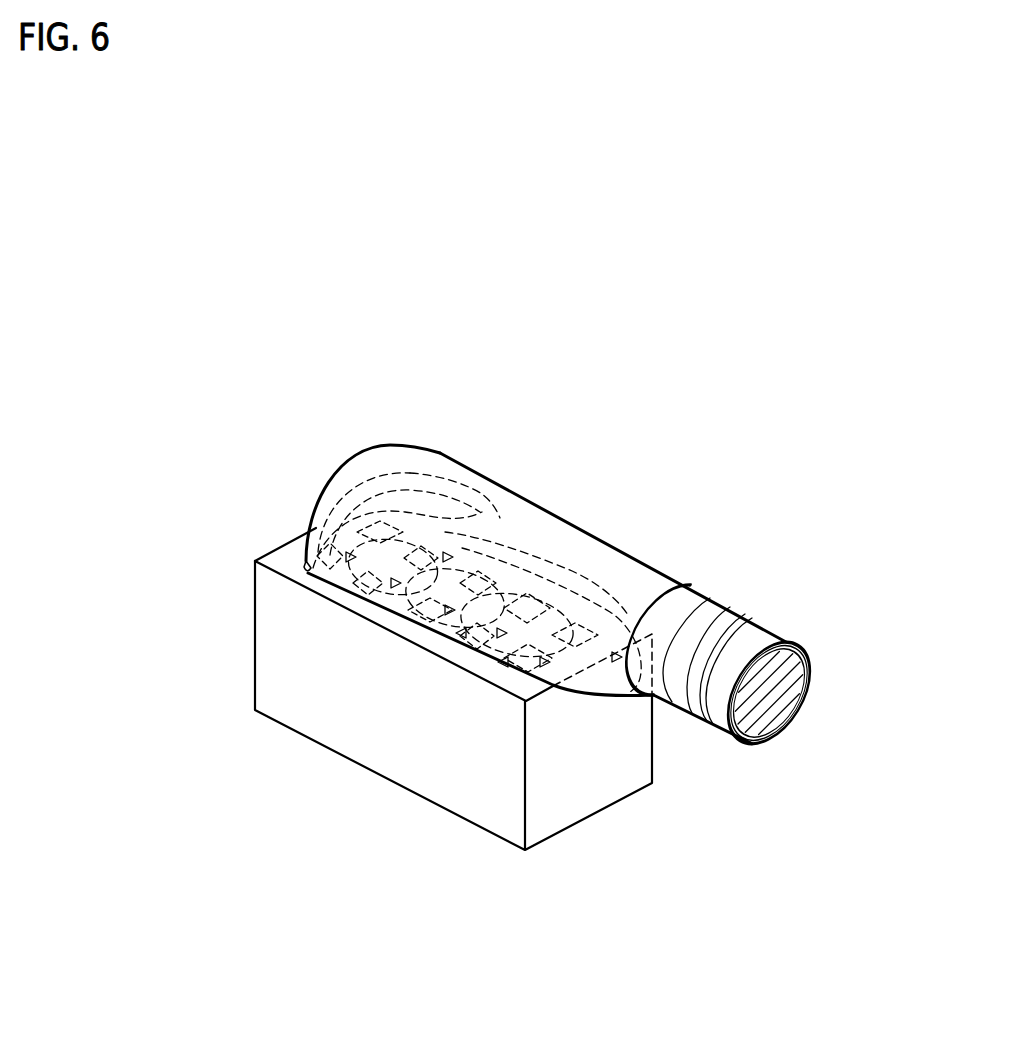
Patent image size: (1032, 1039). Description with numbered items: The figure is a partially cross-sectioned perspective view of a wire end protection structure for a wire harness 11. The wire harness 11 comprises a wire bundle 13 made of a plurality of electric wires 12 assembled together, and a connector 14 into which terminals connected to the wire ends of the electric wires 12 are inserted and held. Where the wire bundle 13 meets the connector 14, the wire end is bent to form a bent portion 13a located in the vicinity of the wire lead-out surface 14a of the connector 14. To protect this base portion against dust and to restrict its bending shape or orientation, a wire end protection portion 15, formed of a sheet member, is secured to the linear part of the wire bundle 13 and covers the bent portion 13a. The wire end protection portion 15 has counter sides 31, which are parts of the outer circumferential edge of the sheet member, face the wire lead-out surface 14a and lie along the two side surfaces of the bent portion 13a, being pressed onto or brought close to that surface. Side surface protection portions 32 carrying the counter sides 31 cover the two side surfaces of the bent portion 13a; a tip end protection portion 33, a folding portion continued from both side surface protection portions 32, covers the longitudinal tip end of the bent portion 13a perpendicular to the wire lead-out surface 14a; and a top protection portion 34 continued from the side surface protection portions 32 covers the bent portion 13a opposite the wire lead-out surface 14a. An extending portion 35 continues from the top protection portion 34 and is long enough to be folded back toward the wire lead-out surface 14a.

The wire harness 11 is at (697, 494).
The electric wires 12 is at (475, 665).
The wire bundle 13 is at (829, 692).
The bent portion 13a is at (431, 492).
The connector 14 is at (294, 675).
The wire lead-out surface 14a is at (285, 556).
The wire end protection portion 15 is at (479, 456).
The counter sides 31 is at (306, 582).
The side surface protection portions 32 is at (365, 567).
The tip end protection portion 33 is at (326, 500).
The top protection portion 34 is at (518, 517).
The extending portion 35 is at (420, 574).